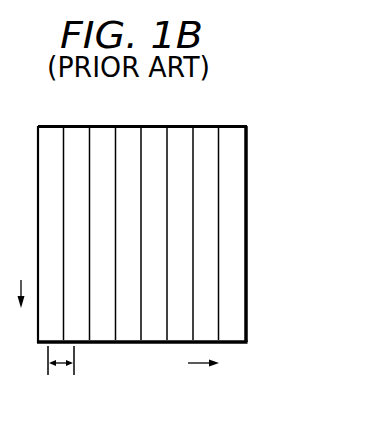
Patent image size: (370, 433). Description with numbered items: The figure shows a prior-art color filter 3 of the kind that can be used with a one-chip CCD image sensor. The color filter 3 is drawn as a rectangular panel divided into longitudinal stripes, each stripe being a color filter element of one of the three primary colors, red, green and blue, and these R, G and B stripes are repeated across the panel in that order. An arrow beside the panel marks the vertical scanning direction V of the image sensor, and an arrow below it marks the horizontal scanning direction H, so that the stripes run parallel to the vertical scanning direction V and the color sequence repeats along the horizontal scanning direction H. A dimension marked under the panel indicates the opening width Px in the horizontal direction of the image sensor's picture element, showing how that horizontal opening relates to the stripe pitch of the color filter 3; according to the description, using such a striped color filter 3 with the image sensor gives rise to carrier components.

The color filter 3 is at (105, 112).
The vertical scanning direction V is at (21, 308).
The horizontal scanning direction H is at (212, 364).
The opening width in the horizontal direction Px is at (61, 372).